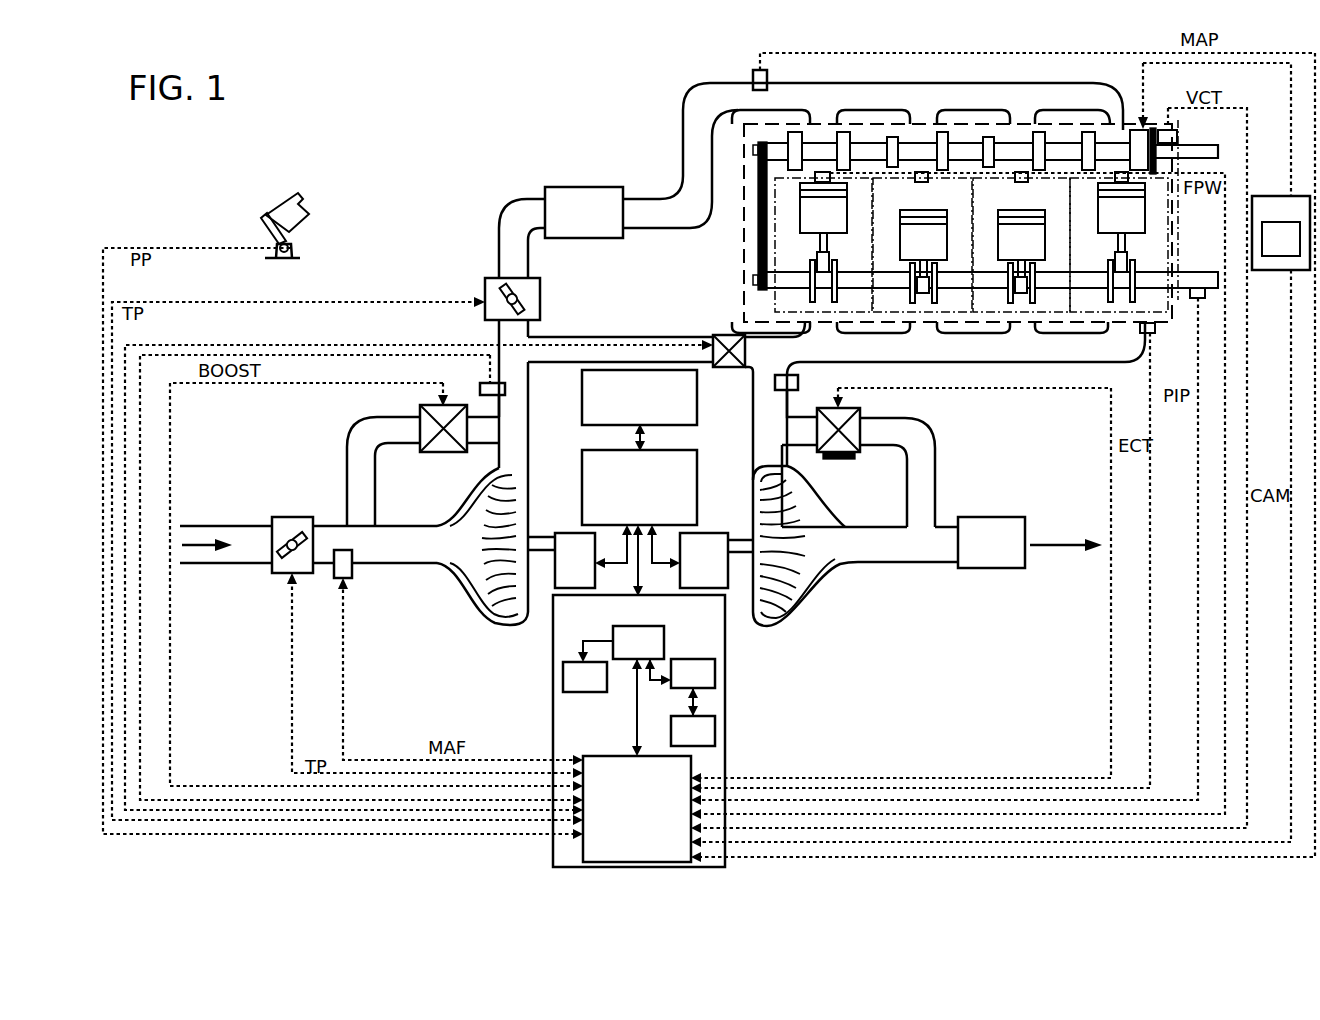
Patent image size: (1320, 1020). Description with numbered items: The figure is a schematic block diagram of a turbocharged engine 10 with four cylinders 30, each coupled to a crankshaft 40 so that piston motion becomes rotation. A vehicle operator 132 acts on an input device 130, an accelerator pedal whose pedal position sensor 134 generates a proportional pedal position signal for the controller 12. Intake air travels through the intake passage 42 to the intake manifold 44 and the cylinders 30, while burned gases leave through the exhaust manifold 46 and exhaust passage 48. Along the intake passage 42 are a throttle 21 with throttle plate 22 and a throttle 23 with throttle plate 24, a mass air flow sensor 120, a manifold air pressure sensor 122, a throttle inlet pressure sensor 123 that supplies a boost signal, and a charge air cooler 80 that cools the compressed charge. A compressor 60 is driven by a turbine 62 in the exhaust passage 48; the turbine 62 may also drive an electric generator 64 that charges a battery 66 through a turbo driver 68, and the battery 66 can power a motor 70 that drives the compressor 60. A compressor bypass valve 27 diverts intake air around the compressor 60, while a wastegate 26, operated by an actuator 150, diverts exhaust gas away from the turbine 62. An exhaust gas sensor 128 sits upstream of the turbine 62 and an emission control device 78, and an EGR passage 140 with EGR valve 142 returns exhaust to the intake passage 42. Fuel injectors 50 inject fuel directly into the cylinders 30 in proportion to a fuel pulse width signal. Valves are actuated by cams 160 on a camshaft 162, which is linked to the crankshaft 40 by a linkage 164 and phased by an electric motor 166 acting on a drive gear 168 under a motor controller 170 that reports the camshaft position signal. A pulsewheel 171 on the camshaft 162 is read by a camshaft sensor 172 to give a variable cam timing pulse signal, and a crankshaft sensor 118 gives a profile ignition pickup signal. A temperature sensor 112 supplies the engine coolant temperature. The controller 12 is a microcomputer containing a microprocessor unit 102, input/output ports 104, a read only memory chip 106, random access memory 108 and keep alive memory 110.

The engine 10 is at (744, 258).
The controller 12 is at (600, 730).
The throttle 21 is at (275, 516).
The throttle plate 22 is at (297, 536).
The throttle 23 is at (487, 277).
The throttle plate 24 is at (527, 310).
The wastegate 26 is at (862, 418).
The compressor bypass valve 27 is at (420, 412).
The cylinder 30 is at (1158, 259).
The crankshaft 40 is at (1187, 288).
The intake passage 42 is at (263, 554).
The intake manifold 44 is at (810, 103).
The exhaust manifold 46 is at (834, 357).
The exhaust passage 48 is at (903, 554).
The fuel injector 50 is at (1115, 178).
The compressor 60 is at (484, 592).
The turbine 62 is at (790, 500).
The electric generator 64 is at (715, 568).
The battery 66 is at (582, 402).
The turbo driver 68 is at (684, 450).
The motor 70 is at (586, 568).
The emission control device 78 is at (1003, 553).
The charge air cooler 80 is at (566, 186).
The microprocessor unit 102 is at (604, 634).
The input/output ports 104 is at (685, 827).
The read only memory chip 106 is at (563, 682).
The random access memory 108 is at (677, 659).
The keep alive memory 110 is at (671, 726).
The temperature sensor 112 is at (1145, 335).
The crankshaft sensor 118 is at (1195, 312).
The mass air flow sensor 120 is at (352, 570).
The manifold air pressure sensor 122 is at (753, 74).
The throttle inlet pressure sensor 123 is at (482, 388).
The exhaust gas sensor 128 is at (798, 382).
The input device 130 is at (268, 226).
The vehicle operator 132 is at (310, 209).
The pedal position sensor 134 is at (296, 248).
The EGR passage 140 is at (615, 337).
The EGR valve 142 is at (738, 334).
The actuator 150 is at (845, 460).
The cam 160 is at (963, 126).
The camshaft 162 is at (1200, 152).
The linkage 164 is at (756, 214).
The electric motor 166 is at (1304, 219).
The drive gear 168 is at (1137, 128).
The motor controller 170 is at (1298, 249).
The pulsewheel 171 is at (1153, 127).
The camshaft sensor 172 is at (1178, 136).